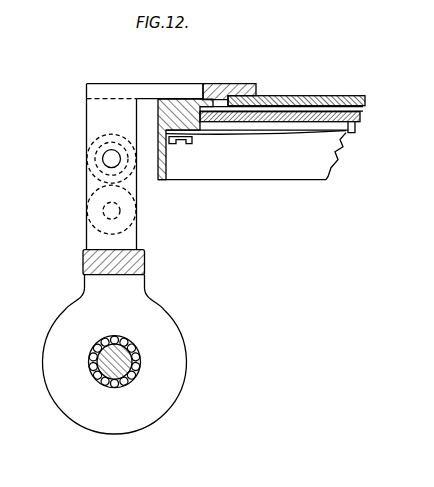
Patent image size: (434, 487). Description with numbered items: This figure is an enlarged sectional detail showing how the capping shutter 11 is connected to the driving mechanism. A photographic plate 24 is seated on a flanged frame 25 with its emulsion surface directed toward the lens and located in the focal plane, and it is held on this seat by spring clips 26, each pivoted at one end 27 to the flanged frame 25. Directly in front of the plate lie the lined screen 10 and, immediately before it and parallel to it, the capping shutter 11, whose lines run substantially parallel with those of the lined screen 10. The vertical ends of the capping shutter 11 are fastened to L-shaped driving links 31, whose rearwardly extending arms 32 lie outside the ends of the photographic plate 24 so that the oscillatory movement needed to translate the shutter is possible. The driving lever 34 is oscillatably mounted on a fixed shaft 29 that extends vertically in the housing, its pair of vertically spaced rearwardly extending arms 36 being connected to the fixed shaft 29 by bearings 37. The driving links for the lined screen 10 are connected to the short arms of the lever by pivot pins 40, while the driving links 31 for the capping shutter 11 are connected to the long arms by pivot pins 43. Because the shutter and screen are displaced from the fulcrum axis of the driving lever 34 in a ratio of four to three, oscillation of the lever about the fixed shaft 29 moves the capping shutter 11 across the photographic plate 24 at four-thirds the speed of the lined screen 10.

The lined screen 10 is at (356, 109).
The capping shutter 11 is at (358, 98).
The photographic plate 24 is at (343, 126).
The flanged frame 25 is at (194, 99).
The spring clips 26 is at (275, 133).
The pivot end 27 is at (183, 143).
The fixed shaft 29 is at (103, 390).
The L-shaped driving links 31 is at (82, 84).
The rearwardly extending arms 32 is at (88, 118).
The driving lever 34 is at (132, 262).
The rearwardly extending arms 36 is at (132, 307).
The bearings 37 is at (135, 343).
The pivot pins 40 is at (100, 208).
The pivot pins 43 is at (102, 160).